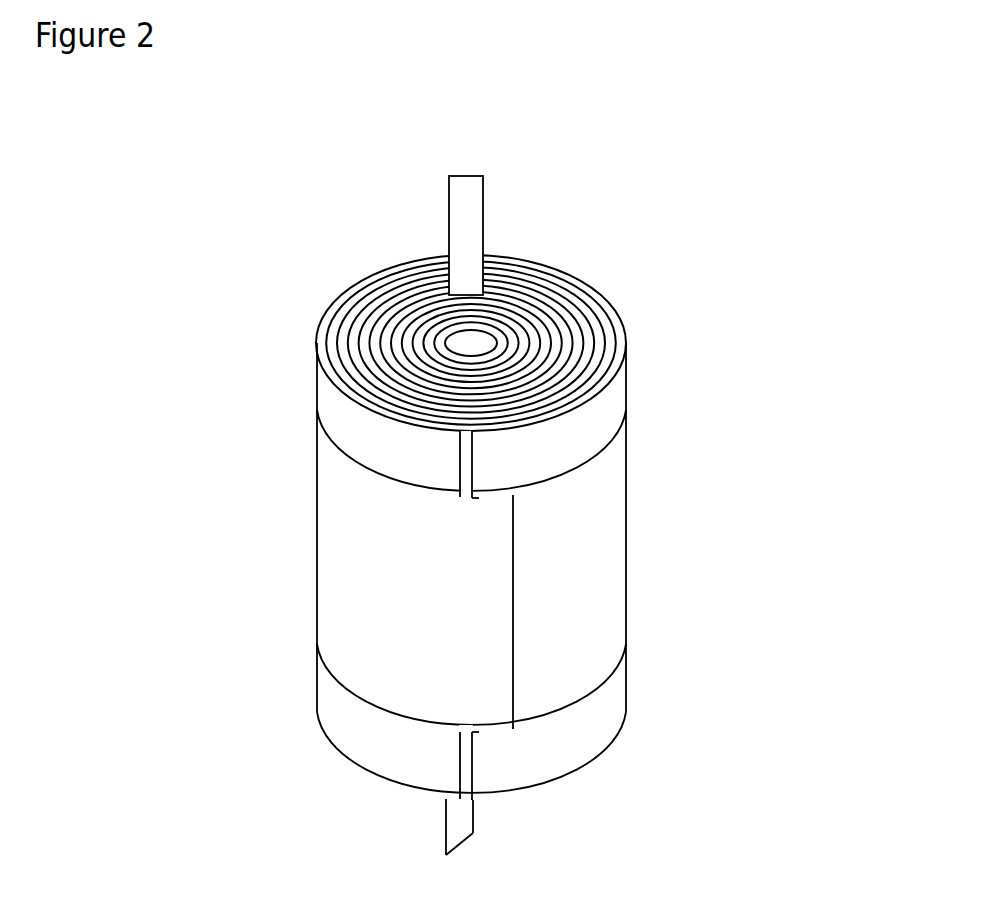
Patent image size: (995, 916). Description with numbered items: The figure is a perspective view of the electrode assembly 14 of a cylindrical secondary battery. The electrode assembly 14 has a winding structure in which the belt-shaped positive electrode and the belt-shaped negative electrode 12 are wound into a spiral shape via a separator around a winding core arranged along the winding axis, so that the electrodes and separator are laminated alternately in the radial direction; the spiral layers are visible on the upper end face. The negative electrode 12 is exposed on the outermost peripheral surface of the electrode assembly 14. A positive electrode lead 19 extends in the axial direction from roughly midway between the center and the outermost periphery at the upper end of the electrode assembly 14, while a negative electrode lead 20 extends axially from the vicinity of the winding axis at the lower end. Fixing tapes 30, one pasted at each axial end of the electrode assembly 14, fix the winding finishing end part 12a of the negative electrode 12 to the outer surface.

The electrode assembly 14 is at (504, 476).
The negative electrode 12 is at (600, 580).
The winding finishing end part 12a is at (512, 683).
The positive electrode lead 19 is at (466, 187).
The negative electrode lead 20 is at (453, 828).
The fixing tape 30 is at (600, 434).